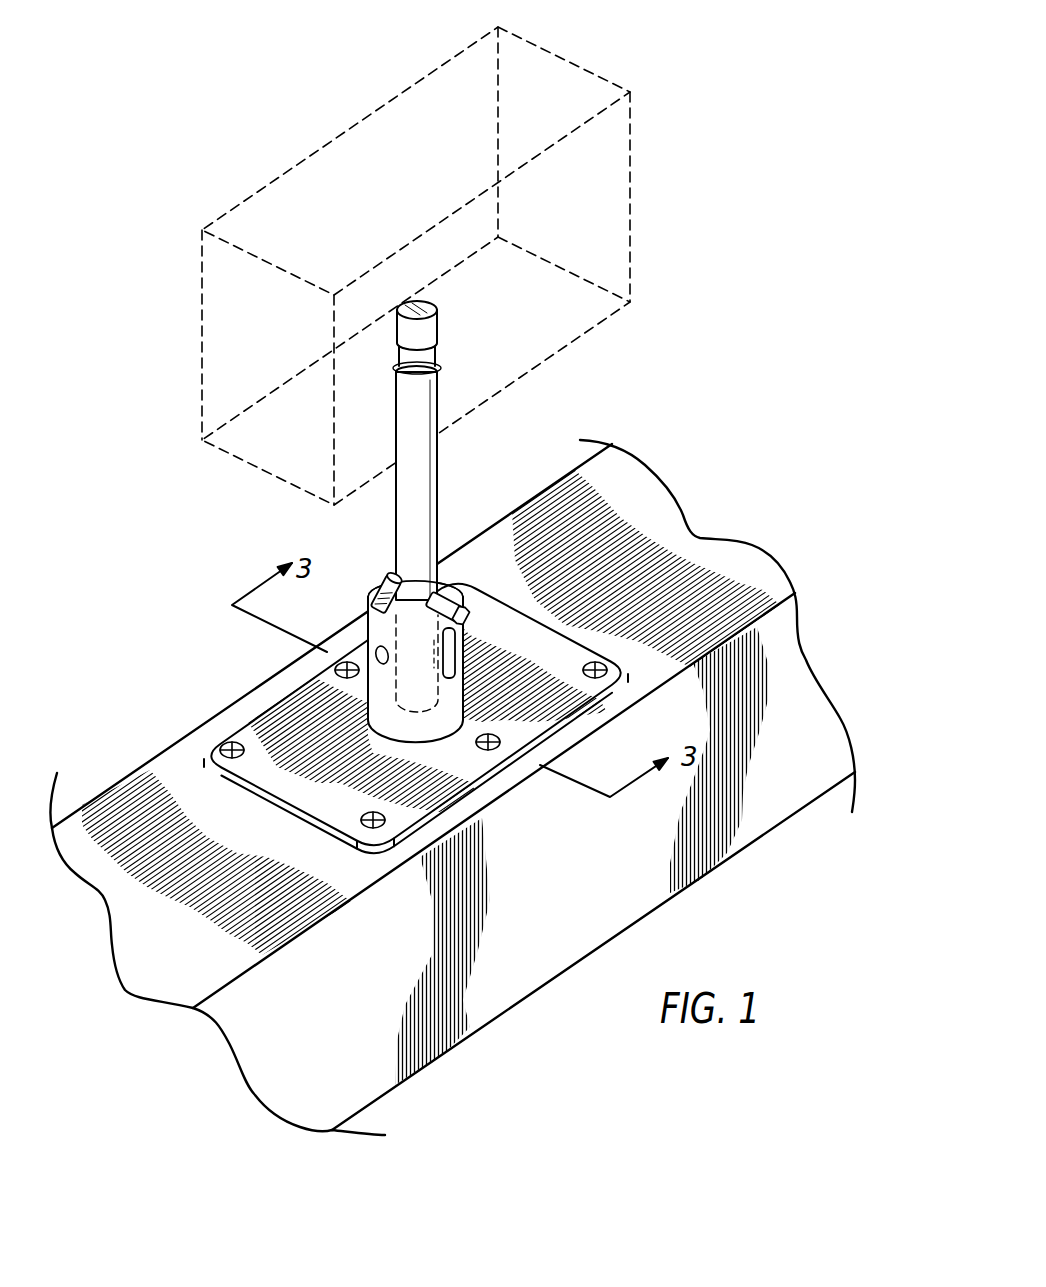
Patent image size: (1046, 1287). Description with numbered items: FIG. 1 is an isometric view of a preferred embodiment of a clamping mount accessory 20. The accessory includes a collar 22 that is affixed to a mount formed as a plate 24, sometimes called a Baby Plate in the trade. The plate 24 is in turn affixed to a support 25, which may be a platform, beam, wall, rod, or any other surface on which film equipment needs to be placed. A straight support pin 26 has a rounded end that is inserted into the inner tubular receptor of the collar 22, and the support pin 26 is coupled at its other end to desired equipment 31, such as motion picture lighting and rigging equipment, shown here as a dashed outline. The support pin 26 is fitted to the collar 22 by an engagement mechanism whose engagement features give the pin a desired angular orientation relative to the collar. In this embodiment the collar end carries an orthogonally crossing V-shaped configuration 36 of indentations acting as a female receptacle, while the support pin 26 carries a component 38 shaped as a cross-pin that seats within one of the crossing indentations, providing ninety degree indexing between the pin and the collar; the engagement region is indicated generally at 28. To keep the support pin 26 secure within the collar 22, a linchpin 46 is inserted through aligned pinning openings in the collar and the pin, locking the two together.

The clamping mount accessory 20 is at (210, 565).
The collar 22 is at (358, 652).
The plate 24 is at (243, 732).
The support 25 is at (683, 533).
The support pin 26 is at (430, 448).
The clamp 28 is at (484, 568).
The equipment 31 is at (577, 60).
The orthogonally crossing V-shaped configuration 36 is at (387, 605).
The cross-pin component 38 is at (450, 605).
The linchpin 46 is at (455, 645).